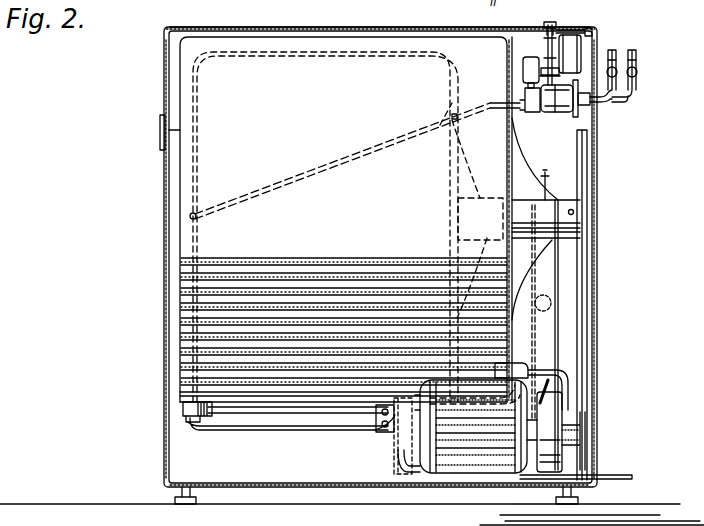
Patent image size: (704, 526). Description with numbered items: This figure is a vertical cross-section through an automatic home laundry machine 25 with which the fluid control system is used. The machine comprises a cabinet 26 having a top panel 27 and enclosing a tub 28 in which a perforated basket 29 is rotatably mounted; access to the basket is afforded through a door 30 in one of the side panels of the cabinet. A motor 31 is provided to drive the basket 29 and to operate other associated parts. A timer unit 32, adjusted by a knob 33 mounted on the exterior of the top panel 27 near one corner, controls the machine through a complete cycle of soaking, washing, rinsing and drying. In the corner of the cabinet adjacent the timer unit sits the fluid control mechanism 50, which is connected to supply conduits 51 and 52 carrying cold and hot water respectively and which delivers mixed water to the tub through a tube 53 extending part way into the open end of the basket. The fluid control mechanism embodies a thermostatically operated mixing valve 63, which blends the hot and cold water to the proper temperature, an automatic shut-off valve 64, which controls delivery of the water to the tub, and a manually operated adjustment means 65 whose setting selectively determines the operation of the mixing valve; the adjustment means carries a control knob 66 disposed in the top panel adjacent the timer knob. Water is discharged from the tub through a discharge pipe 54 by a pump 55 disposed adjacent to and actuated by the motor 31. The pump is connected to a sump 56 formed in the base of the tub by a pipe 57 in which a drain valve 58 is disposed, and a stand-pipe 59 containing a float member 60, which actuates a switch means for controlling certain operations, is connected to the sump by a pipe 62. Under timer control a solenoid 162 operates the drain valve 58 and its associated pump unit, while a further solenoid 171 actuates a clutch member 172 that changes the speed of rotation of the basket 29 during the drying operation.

The automatic home laundry machine 25 is at (604, 156).
The cabinet 26 is at (165, 360).
The top panel 27 is at (403, 28).
The tub 28 is at (184, 372).
The perforated basket 29 is at (195, 92).
The door 30 is at (162, 148).
The motor 31 is at (478, 455).
The timer unit 32 is at (577, 54).
The knob 33 is at (582, 32).
The fluid control mechanism 50 is at (553, 112).
The supply conduit 51 is at (634, 88).
The supply conduit 52 is at (620, 92).
The tube 53 is at (515, 100).
The discharge pipe 54 is at (618, 476).
The pump 55 is at (397, 458).
The sump 56 is at (186, 412).
The pipe 57 is at (240, 425).
The drain valve 58 is at (375, 428).
The stand-pipe 59 is at (560, 332).
The float member 60 is at (547, 303).
The pipe 62 is at (292, 428).
The thermostatically operated mixing valve 63 is at (558, 115).
The automatic shut-off valve 64 is at (525, 92).
The manually operated adjustment means 65 is at (547, 52).
The control knob 66 is at (553, 24).
The solenoid 162 is at (352, 425).
The solenoid 171 is at (515, 372).
The clutch member 172 is at (548, 416).